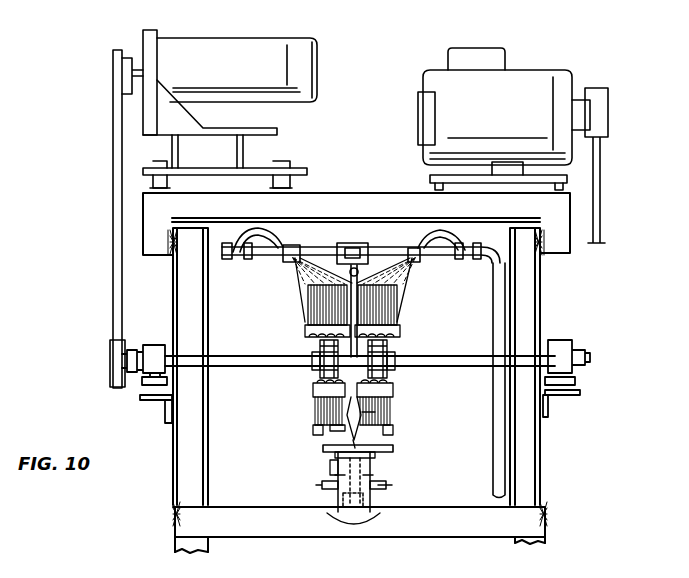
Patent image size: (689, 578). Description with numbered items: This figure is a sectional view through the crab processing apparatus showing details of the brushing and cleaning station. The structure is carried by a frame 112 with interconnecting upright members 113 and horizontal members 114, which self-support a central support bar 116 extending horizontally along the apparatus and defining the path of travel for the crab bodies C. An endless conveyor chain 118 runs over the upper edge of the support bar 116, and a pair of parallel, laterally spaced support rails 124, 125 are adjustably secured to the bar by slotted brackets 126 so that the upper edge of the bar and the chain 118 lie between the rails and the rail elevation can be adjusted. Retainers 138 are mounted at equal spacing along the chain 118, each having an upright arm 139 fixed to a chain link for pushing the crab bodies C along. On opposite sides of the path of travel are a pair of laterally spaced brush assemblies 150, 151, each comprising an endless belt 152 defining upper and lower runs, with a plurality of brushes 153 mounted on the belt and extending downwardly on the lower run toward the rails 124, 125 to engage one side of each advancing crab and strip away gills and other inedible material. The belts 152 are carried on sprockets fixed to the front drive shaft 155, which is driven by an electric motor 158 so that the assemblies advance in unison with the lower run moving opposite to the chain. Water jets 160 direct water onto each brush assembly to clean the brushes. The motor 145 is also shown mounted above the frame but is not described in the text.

The frame 112 is at (540, 452).
The upright member 113 is at (252, 465).
The horizontal member 114 is at (170, 255).
The central support bar 116 is at (372, 468).
The chain 118 is at (330, 466).
The support rail 124 is at (322, 448).
The support rail 125 is at (380, 448).
The slotted bracket 126 is at (353, 523).
The retainer 138 is at (360, 430).
The upright arm 139 is at (376, 410).
The motor 145 is at (515, 110).
The brush assembly 150 is at (316, 332).
The brush assembly 151 is at (398, 334).
The endless belt 152 is at (312, 377).
The brush 153 is at (365, 318).
The front drive shaft 155 is at (248, 352).
The electric motor 158 is at (250, 75).
The water jet 160 is at (396, 385).
The crab body C is at (328, 426).